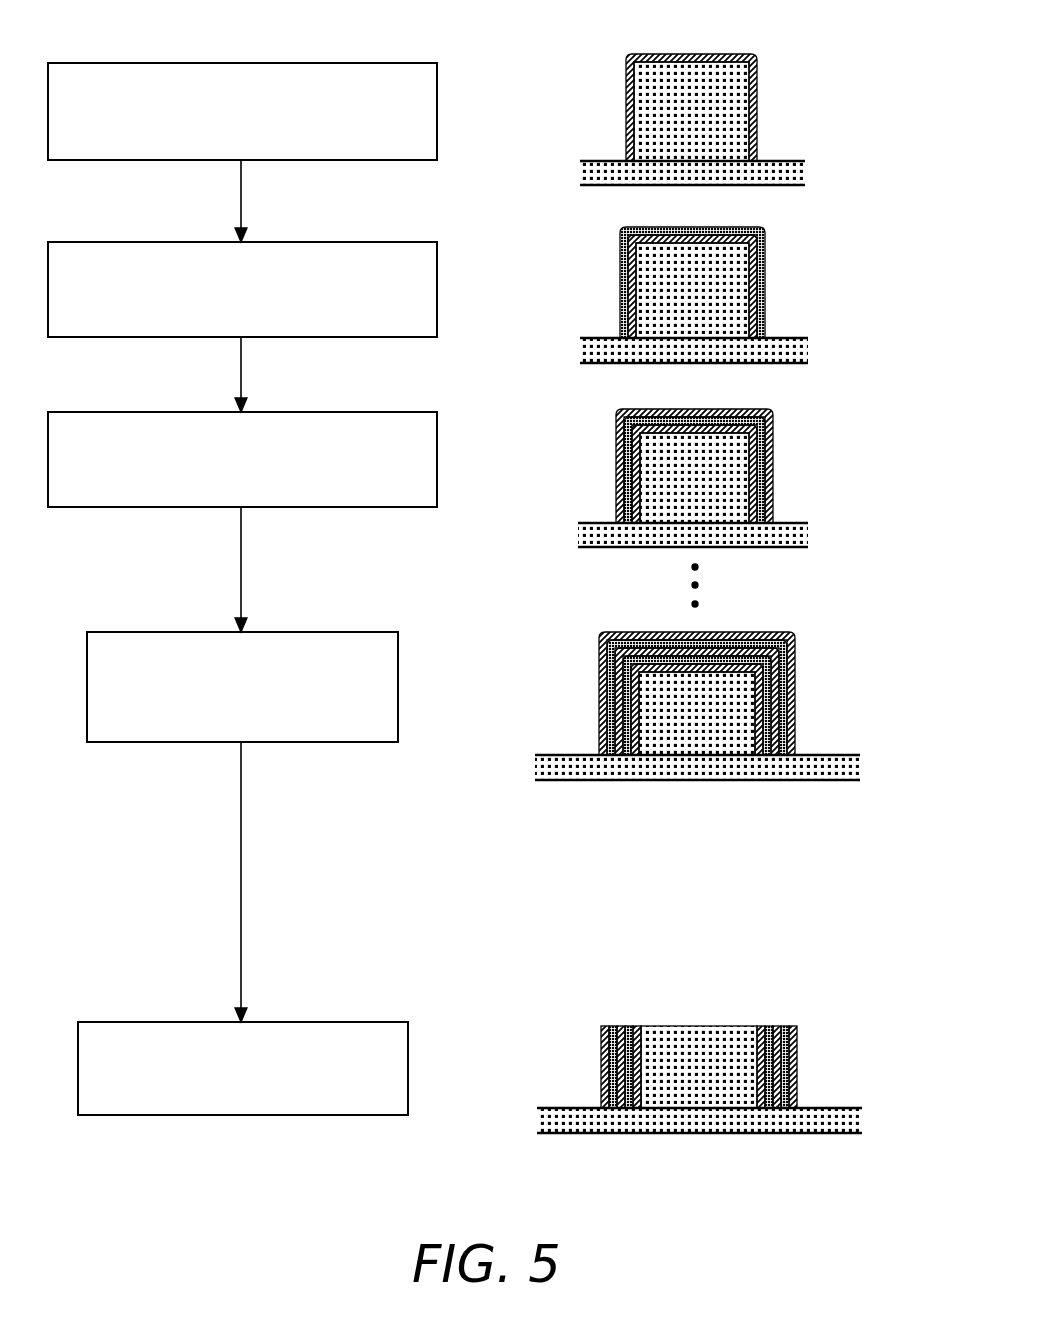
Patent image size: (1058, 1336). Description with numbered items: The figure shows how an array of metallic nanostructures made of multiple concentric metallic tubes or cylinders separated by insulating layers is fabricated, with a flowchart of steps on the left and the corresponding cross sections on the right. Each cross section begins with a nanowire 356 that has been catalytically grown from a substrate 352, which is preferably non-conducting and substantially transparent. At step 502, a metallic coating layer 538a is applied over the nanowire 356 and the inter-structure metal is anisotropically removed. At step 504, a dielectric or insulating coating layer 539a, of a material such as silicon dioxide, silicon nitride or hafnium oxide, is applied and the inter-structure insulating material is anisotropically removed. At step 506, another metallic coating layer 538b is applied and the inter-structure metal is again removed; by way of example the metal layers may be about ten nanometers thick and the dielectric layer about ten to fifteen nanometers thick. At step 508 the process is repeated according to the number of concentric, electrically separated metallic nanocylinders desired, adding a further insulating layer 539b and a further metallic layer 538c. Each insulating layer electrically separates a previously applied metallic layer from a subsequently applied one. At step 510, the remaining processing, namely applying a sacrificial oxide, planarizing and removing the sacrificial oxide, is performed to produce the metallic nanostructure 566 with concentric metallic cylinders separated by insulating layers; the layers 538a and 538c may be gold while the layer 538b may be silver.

The metallic coating step 502 is at (242, 80).
The dielectric coating step 504 is at (242, 255).
The second metallic coating step 506 is at (242, 425).
The repeating step 508 is at (242, 654).
The remaining processing step 510 is at (243, 1035).
The substrate 352 is at (805, 175).
The nanowire 356 is at (712, 122).
The metallic coating layer 538a is at (626, 92).
The metallic coating layer 538b is at (616, 448).
The metallic coating layer 538c is at (599, 636).
The dielectric coating layer 539a is at (620, 296).
The dielectric coating layer 539b is at (607, 645).
The metallic nanostructure 566 is at (748, 962).